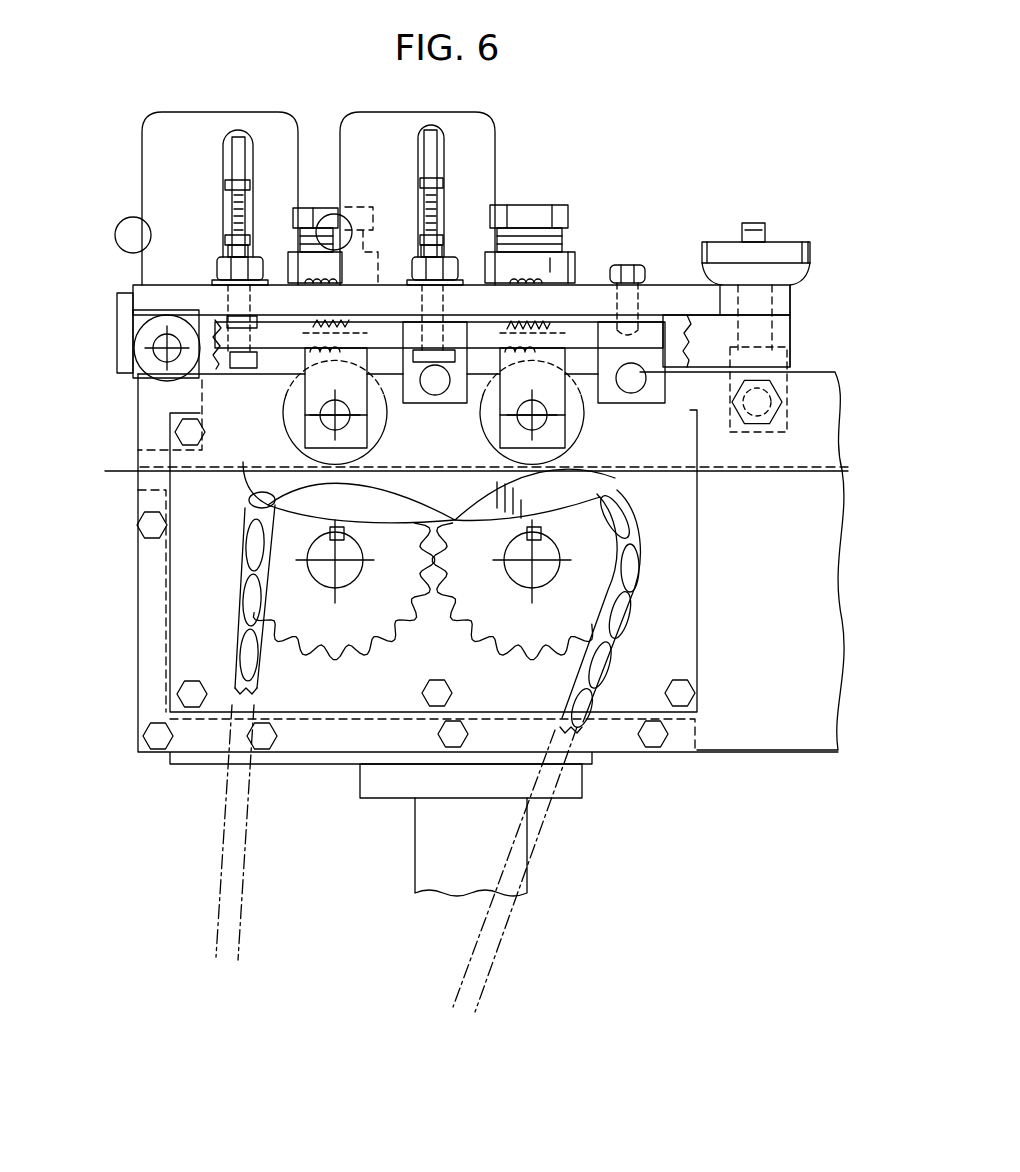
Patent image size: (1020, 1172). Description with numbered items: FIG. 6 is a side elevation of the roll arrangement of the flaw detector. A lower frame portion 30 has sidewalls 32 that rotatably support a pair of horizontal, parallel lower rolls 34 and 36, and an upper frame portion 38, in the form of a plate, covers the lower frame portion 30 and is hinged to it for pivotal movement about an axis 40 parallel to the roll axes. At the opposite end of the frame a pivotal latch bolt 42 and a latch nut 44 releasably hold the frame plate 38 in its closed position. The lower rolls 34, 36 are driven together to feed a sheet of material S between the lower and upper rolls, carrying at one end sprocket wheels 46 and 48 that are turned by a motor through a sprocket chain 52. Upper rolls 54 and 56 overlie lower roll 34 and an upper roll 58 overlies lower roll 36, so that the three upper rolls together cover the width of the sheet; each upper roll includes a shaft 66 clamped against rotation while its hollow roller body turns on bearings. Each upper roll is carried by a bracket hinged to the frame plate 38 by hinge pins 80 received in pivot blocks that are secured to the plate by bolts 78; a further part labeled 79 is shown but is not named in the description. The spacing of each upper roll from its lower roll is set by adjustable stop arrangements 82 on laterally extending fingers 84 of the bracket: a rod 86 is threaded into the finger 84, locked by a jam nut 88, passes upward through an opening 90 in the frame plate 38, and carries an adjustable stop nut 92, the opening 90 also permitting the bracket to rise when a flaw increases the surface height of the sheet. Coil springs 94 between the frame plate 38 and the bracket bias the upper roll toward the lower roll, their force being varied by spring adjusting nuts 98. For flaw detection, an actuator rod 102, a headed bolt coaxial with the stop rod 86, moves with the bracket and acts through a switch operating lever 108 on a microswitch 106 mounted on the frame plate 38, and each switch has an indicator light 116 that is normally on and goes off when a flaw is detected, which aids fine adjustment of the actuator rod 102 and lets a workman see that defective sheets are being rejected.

The lower frame portion 30 is at (142, 712).
The sidewalls 32 is at (763, 730).
The lower roll 34 is at (597, 488).
The lower roll 36 is at (387, 503).
The upper frame portion 38 is at (668, 283).
The axis 40 is at (167, 348).
The pivotal latch bolt 42 is at (765, 233).
The latch nut 44 is at (810, 250).
The sprocket wheel 46 is at (527, 627).
The sprocket wheel 48 is at (330, 627).
The sprocket chain 52 is at (583, 668).
The upper roll 54 is at (573, 405).
The upper roll 56 is at (573, 432).
The upper roll 58 is at (293, 427).
The shaft 66 is at (343, 405).
The bolts 78 is at (630, 270).
The block 79 is at (608, 398).
The hinge pins 80 is at (435, 387).
The adjustable stop arrangements 82 is at (207, 262).
The fingers 84 is at (246, 360).
The rod 86 is at (424, 298).
The jam nut 88 is at (218, 368).
The opening 90 is at (257, 293).
The adjustable stop nut 92 is at (455, 257).
The coil springs 94 is at (543, 316).
The spring adjusting nut 98 is at (317, 210).
The actuator rod 102 is at (442, 215).
The microswitch 106 is at (260, 125).
The switch operating lever 108 is at (235, 158).
The indicator light 116 is at (133, 217).
The sheet of material S is at (443, 470).